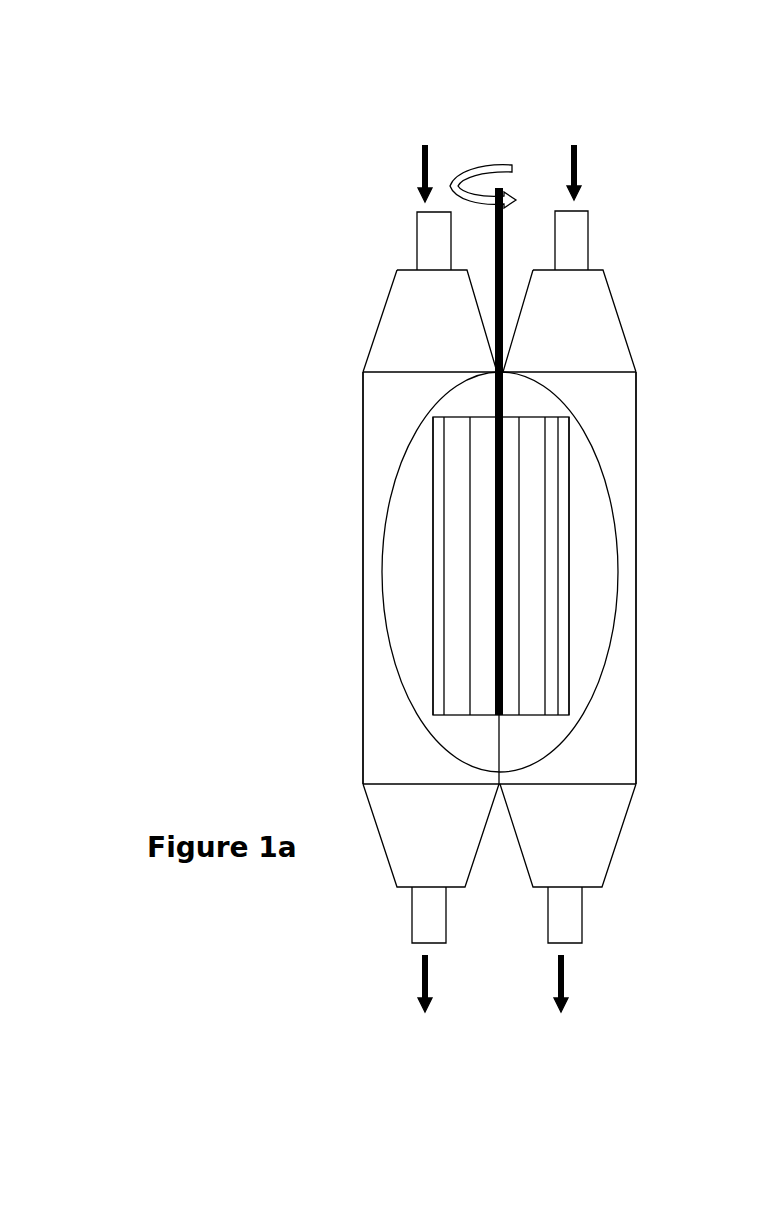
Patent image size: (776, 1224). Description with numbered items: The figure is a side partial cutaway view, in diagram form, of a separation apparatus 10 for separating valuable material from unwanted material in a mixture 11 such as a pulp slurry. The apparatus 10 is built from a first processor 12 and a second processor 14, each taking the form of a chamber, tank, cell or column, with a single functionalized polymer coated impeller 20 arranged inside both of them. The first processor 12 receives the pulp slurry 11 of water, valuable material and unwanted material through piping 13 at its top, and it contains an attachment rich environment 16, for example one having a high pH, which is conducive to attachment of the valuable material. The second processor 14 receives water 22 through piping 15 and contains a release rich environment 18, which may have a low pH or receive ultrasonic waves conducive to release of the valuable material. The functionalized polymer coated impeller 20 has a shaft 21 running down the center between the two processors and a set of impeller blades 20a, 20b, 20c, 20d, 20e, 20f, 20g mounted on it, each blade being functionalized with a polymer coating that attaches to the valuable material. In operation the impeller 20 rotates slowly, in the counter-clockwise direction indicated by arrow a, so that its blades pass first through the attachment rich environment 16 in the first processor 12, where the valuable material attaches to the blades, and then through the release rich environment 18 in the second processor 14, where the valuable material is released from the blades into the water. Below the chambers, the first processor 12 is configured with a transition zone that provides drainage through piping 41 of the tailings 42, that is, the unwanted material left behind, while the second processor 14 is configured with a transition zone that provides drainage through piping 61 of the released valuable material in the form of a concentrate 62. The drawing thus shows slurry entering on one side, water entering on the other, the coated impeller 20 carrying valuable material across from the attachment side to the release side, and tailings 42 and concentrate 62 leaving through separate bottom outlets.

The apparatus 10 is at (242, 276).
The mixture 11 is at (381, 181).
The first processor 12 is at (379, 320).
The piping 13 is at (417, 244).
The second processor 14 is at (618, 315).
The piping 15 is at (588, 243).
The attachment rich environment 16 is at (362, 425).
The release rich environment 18 is at (622, 418).
The functionalized polymer coated impeller 20 is at (425, 572).
The impeller blade 20a is at (433, 532).
The impeller blade 20b is at (444, 587).
The impeller blade 20c is at (470, 608).
The impeller blade 20d is at (520, 638).
The impeller blade 20e is at (545, 563).
The impeller blade 20f is at (557, 513).
The impeller blade 20g is at (655, 566).
The shaft 21 is at (503, 248).
The water 22 is at (617, 170).
The arrow a is at (485, 163).
The piping 41 is at (412, 908).
The tailings 42 is at (385, 993).
The piping 61 is at (582, 915).
The concentrate 62 is at (627, 993).